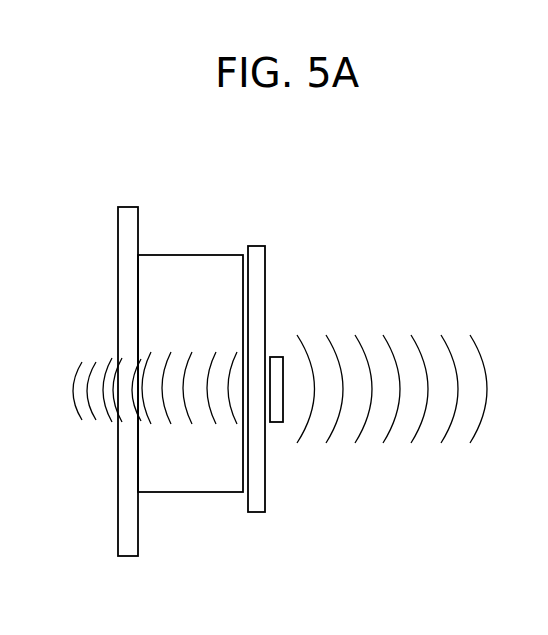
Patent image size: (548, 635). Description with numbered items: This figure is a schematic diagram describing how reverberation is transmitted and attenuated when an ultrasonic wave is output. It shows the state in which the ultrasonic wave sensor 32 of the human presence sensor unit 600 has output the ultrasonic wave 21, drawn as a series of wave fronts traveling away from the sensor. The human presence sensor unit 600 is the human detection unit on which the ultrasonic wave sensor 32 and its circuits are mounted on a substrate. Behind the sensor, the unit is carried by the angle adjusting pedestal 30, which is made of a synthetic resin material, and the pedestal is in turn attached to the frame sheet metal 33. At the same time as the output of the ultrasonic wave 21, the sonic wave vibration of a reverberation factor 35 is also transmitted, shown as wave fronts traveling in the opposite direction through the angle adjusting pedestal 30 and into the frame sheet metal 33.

The frame sheet metal 33 is at (138, 219).
The angle adjusting pedestal 30 is at (178, 255).
The human presence sensor unit 600 is at (265, 257).
The ultrasonic wave sensor 32 is at (270, 357).
The reverberation factor 35 is at (93, 361).
The ultrasonic wave 21 is at (483, 349).